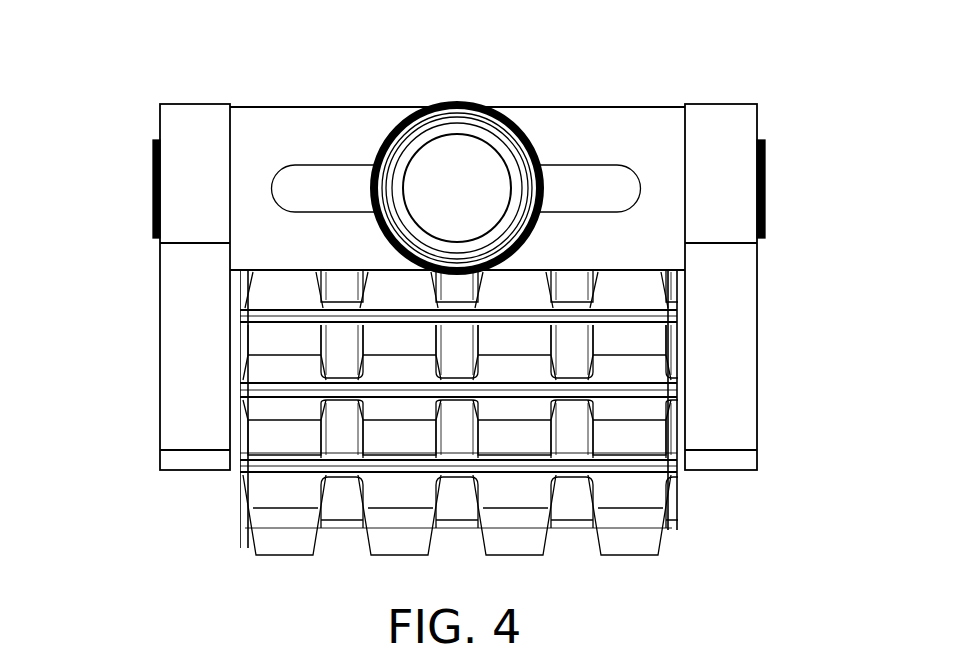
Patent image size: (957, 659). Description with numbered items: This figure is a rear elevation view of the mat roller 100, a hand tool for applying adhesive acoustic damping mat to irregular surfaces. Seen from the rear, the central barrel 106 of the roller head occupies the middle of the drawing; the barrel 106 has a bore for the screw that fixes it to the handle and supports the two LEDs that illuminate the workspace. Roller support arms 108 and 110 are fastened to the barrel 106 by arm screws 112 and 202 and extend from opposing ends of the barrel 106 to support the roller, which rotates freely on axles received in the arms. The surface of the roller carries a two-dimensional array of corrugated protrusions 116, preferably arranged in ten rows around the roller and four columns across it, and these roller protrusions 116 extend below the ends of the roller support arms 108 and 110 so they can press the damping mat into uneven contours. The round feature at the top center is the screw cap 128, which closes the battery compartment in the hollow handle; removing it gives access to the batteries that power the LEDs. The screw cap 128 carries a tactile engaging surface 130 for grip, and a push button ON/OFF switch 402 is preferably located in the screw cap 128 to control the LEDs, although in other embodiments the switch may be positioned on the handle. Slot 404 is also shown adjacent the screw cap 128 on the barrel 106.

The mat roller 100 is at (160, 70).
The barrel 106 is at (296, 120).
The roller support arm 108 is at (730, 333).
The roller support arm 110 is at (185, 345).
The arm screw 112 is at (765, 173).
The corrugated protrusions 116 is at (630, 552).
The screw cap 128 is at (485, 117).
The tactile engaging surface 130 is at (456, 88).
The arm screw 202 is at (153, 170).
The push button ON/OFF switch 402 is at (435, 155).
The slot 404 is at (628, 165).